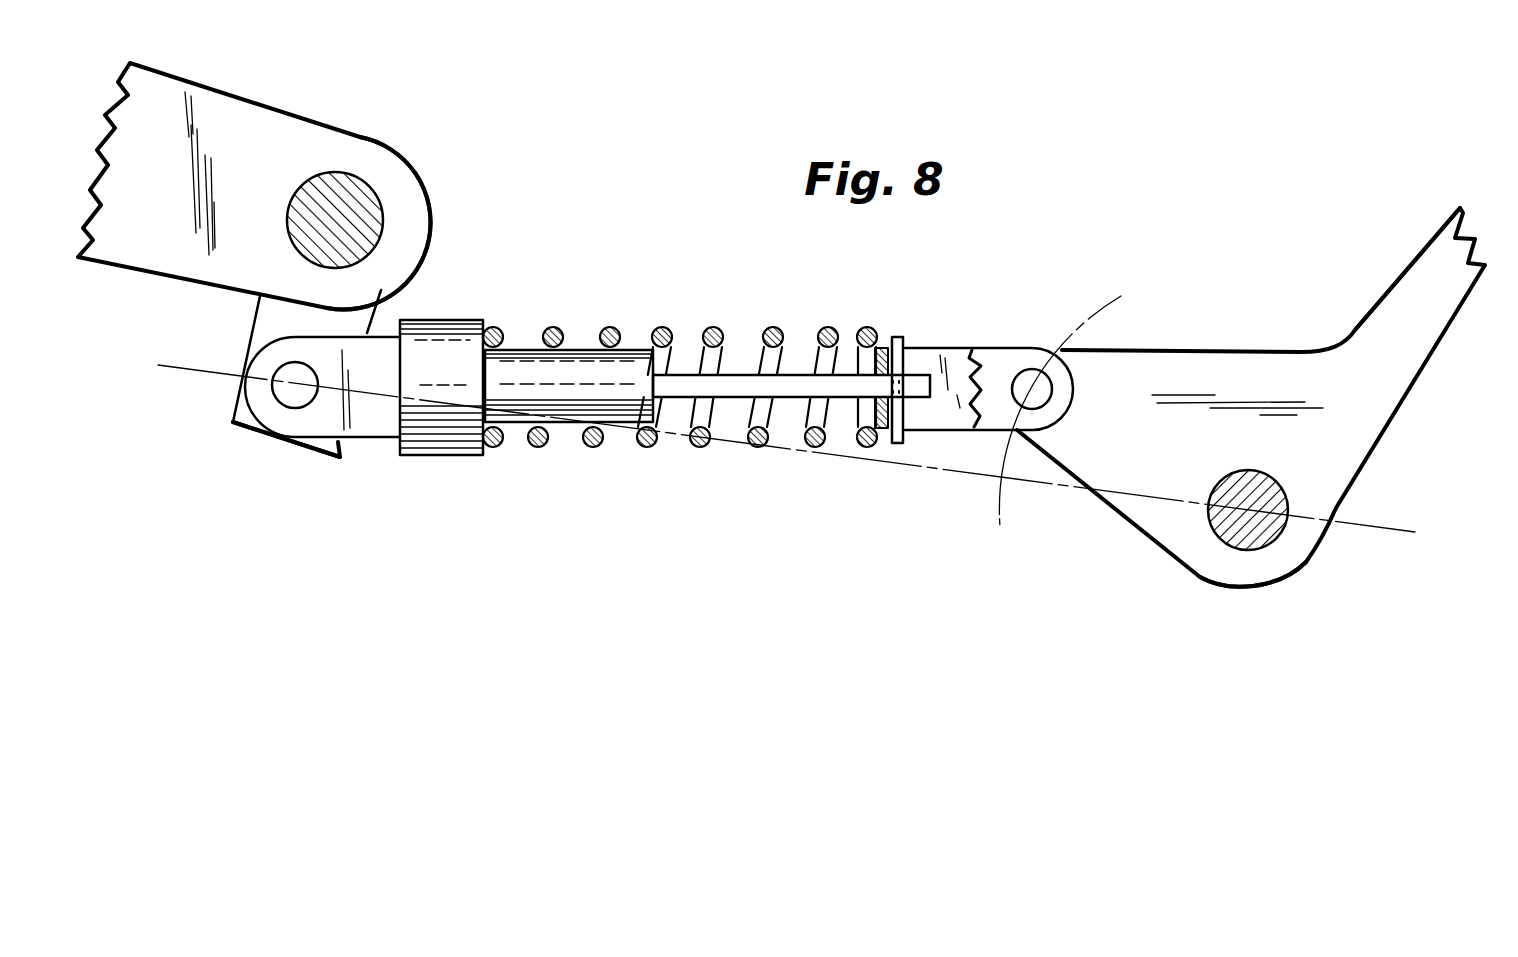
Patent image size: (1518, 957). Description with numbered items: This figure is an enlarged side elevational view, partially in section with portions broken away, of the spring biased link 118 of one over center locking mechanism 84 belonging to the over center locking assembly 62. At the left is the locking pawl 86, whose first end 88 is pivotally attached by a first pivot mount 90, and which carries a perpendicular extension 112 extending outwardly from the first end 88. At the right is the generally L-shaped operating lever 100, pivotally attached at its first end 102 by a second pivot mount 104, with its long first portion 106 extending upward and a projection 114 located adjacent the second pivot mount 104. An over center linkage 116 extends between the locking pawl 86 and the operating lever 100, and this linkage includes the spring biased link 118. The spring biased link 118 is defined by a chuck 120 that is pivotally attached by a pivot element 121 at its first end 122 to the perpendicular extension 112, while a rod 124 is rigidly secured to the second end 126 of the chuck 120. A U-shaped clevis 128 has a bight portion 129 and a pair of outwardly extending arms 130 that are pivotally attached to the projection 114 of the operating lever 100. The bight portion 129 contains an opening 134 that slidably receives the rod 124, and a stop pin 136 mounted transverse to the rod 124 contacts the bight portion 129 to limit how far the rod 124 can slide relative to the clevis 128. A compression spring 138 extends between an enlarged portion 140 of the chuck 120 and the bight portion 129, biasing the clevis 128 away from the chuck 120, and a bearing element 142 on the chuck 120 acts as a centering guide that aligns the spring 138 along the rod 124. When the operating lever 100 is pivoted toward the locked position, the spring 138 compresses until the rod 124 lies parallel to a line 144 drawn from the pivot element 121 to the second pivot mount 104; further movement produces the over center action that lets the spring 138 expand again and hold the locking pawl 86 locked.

The over center locking assembly 62 is at (449, 319).
The over center locking mechanism 84 is at (385, 442).
The locking pawl 86 is at (320, 137).
The first end 88 is at (392, 167).
The first pivot mount 90 is at (375, 213).
The operating lever 100 is at (1425, 338).
The first end 102 is at (1280, 560).
The second pivot mount 104 is at (1277, 495).
The long first portion 106 is at (1435, 257).
The perpendicular extension 112 is at (233, 421).
The projection 114 is at (1063, 452).
The over center linkage 116 is at (574, 346).
The spring biased link 118 is at (587, 447).
The chuck 120 is at (352, 420).
The pivot element 121 is at (290, 372).
The first end 122 is at (282, 418).
The rod 124 is at (797, 387).
The second end 126 is at (636, 428).
The clevis 128 is at (987, 428).
The bight portion 129 is at (884, 442).
The arms 130 is at (947, 350).
The opening 134 is at (874, 420).
The stop pin 136 is at (897, 336).
The compression spring 138 is at (703, 447).
The enlarged portion 140 is at (446, 447).
The bearing element 142 is at (616, 356).
The line 144 is at (933, 466).